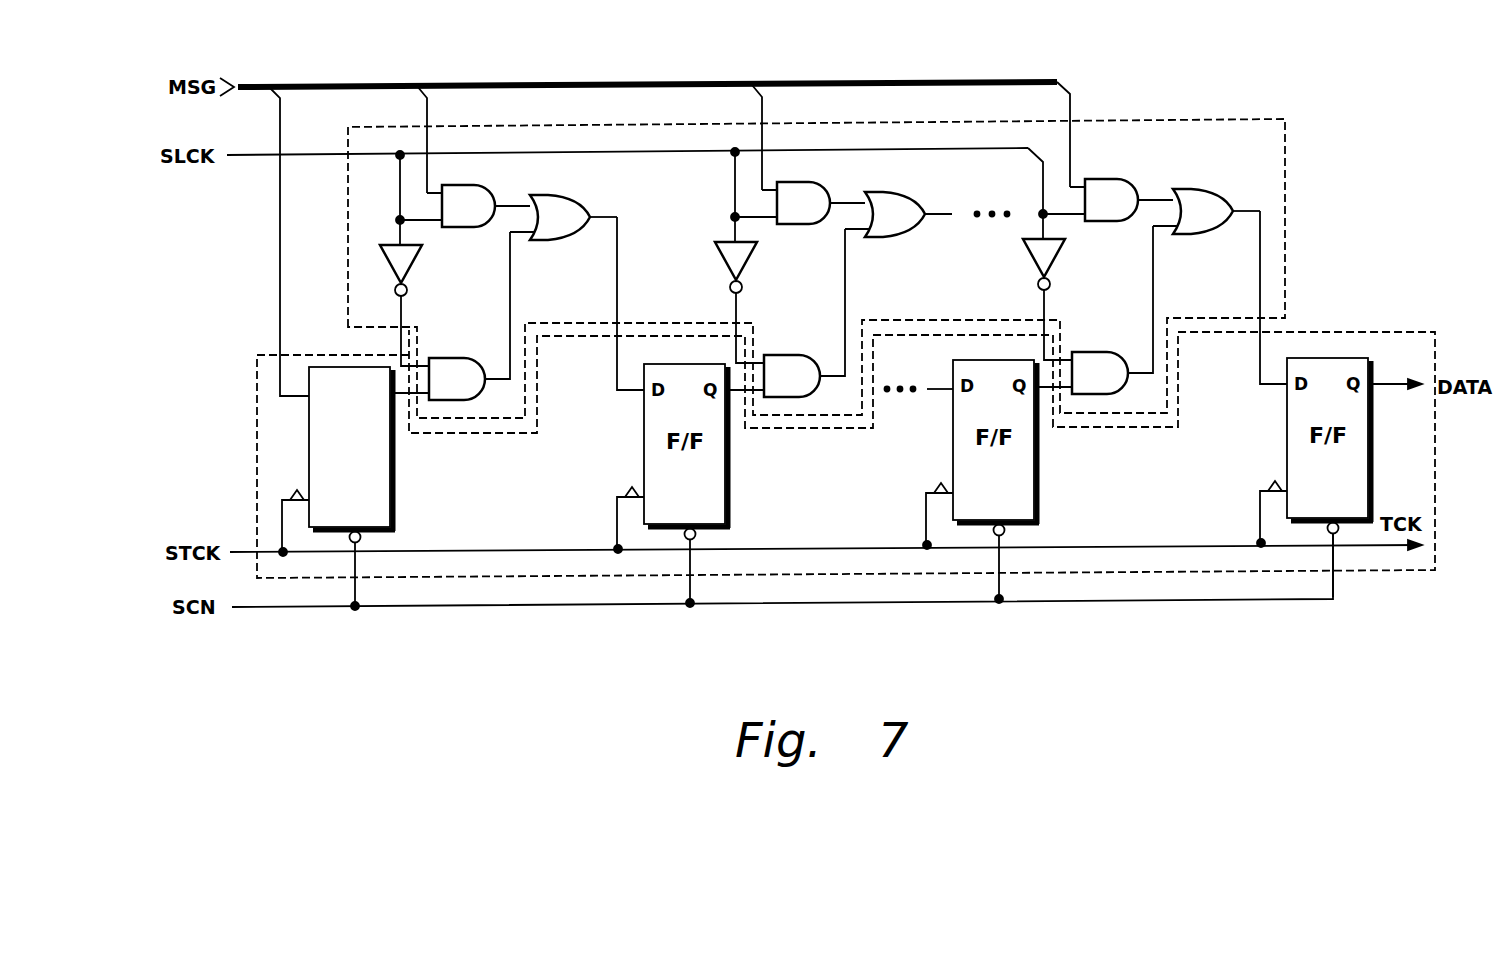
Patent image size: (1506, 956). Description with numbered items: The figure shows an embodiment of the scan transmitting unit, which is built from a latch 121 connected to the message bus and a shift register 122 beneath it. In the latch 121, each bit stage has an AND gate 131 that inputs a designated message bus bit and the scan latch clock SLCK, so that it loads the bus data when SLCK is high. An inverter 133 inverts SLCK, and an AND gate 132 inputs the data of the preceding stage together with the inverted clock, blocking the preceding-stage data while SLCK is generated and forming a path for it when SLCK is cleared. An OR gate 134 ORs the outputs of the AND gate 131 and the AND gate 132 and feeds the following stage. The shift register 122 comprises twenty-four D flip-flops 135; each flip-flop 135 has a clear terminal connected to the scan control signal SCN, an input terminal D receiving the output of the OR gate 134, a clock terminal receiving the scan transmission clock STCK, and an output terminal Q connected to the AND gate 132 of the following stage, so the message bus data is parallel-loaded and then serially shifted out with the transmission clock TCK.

The latch 121 is at (1285, 217).
The shift register 122 is at (257, 463).
The AND gate 131 is at (465, 228).
The AND gate 132 is at (457, 358).
The inverter 133 is at (414, 262).
The OR gate 134 is at (555, 194).
The D flip-flop 135 is at (397, 497).